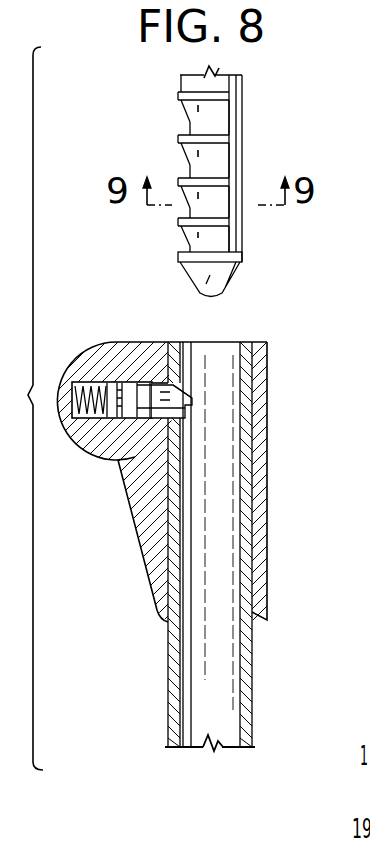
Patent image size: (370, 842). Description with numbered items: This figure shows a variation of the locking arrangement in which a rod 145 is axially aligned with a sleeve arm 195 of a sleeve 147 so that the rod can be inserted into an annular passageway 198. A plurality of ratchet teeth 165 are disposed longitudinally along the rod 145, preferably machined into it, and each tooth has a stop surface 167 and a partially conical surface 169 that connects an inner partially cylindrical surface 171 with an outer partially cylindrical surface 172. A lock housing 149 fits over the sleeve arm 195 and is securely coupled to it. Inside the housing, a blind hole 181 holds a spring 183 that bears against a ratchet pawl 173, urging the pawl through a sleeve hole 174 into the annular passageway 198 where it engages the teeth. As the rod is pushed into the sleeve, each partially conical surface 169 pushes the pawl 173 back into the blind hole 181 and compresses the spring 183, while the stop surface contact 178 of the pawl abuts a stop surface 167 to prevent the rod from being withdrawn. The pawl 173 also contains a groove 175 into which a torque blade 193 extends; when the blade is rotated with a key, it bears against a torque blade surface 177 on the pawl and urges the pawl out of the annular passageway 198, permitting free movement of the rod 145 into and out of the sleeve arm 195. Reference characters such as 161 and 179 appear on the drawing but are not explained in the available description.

The rod 145 is at (213, 174).
The sleeve 147 is at (185, 515).
The lock housing 149 is at (185, 482).
The screw shank 161 is at (240, 122).
The ratchet teeth 165 is at (170, 121).
The stop surface 167 is at (180, 170).
The partially conical surface 169 is at (192, 232).
The inner partially cylindrical surface 171 is at (218, 247).
The outer partially cylindrical surface 172 is at (205, 177).
The ratchet pawl 173 is at (152, 370).
The sleeve hole 174 is at (182, 372).
The groove 175 is at (190, 448).
The torque blade surface 177 is at (132, 385).
The stop surface contact 178 is at (192, 414).
The pin bevel 179 is at (193, 397).
The blind hole 181 is at (97, 440).
The spring 183 is at (78, 382).
The torque blade 193 is at (127, 450).
The sleeve arm 195 is at (252, 680).
The annular passageway 198 is at (192, 682).